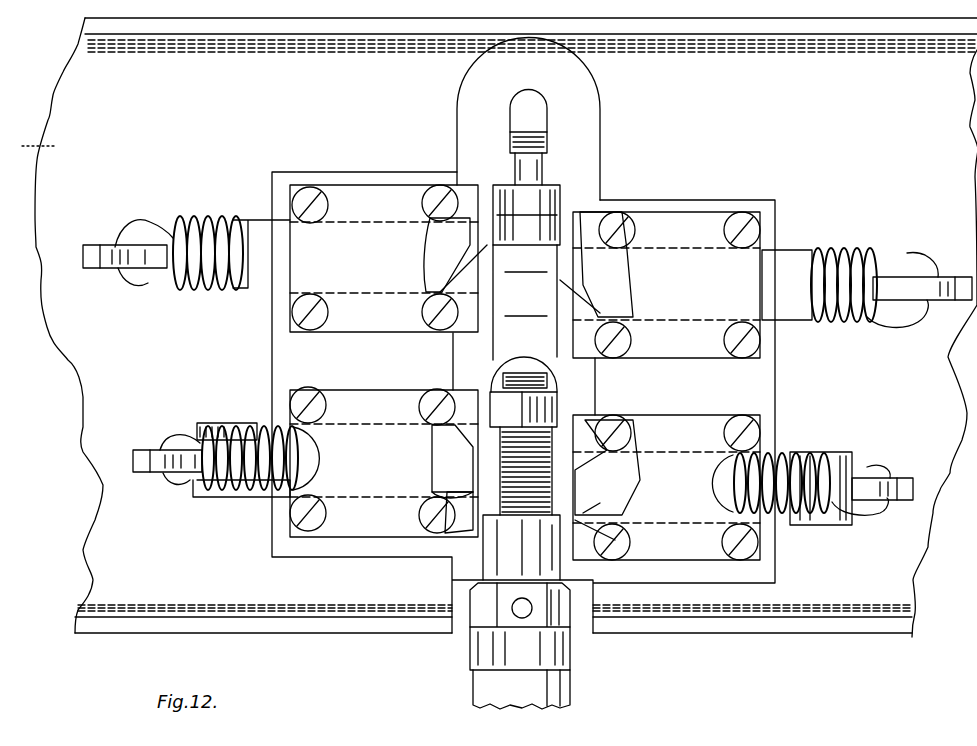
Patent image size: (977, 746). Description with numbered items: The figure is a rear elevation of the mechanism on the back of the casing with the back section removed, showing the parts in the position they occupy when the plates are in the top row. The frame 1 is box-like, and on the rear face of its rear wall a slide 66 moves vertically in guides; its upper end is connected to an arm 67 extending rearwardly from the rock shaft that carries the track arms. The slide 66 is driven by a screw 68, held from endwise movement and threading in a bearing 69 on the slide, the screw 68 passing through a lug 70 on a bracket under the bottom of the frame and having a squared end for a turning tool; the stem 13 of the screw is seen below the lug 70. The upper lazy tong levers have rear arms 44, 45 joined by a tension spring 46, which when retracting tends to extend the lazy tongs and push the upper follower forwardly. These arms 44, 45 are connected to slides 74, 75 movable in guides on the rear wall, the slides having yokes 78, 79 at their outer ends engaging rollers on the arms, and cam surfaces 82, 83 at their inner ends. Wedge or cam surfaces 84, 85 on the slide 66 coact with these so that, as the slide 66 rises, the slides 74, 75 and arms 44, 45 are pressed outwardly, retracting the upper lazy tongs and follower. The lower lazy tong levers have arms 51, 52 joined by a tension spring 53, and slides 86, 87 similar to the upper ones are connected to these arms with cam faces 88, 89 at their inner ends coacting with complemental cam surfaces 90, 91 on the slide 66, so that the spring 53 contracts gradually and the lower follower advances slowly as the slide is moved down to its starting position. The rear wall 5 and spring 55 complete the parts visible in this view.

The frame 1 is at (28, 145).
The panel 5 is at (506, 327).
The shaft 13 is at (560, 688).
The rear arm of lever 44 is at (917, 290).
The rear arm of lever 45 is at (96, 262).
The tension spring 46 is at (200, 288).
The arm of lever 51 is at (863, 493).
The arm of lever 52 is at (145, 478).
The tension spring 53 is at (211, 487).
The spring 55 is at (793, 517).
The slide 66 is at (525, 302).
The arm 67 is at (530, 200).
The screw 68 is at (507, 462).
The bearing 69 is at (497, 562).
The lug 70 is at (488, 643).
The slide 74 is at (600, 258).
The slide 75 is at (447, 240).
The yoke 78 is at (820, 323).
The yoke 79 is at (207, 225).
The cam surface 82 is at (605, 290).
The cam surface 83 is at (432, 245).
The cam surface 84 is at (610, 310).
The cam surface 85 is at (427, 268).
The slide 86 is at (633, 467).
The slide 87 is at (437, 448).
The cam face 88 is at (583, 513).
The cam face 89 is at (440, 487).
The cam surface 90 is at (615, 540).
The cam surface 91 is at (423, 517).